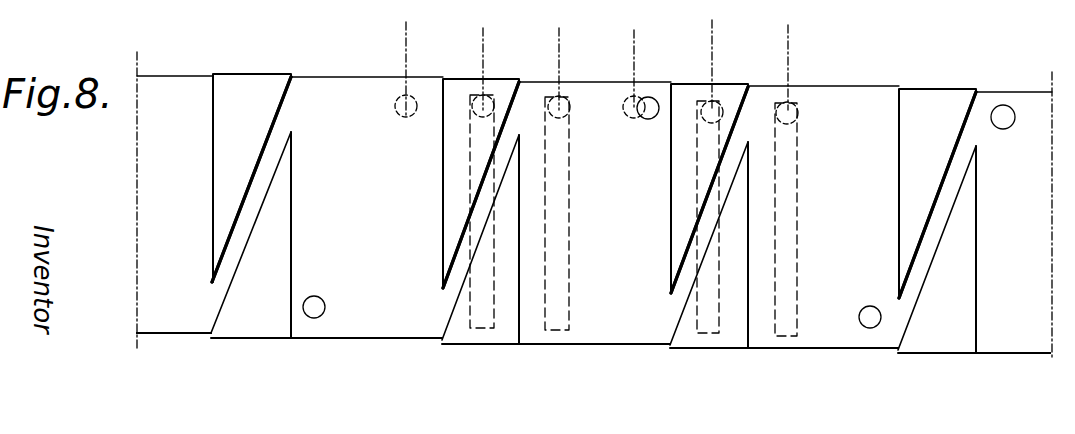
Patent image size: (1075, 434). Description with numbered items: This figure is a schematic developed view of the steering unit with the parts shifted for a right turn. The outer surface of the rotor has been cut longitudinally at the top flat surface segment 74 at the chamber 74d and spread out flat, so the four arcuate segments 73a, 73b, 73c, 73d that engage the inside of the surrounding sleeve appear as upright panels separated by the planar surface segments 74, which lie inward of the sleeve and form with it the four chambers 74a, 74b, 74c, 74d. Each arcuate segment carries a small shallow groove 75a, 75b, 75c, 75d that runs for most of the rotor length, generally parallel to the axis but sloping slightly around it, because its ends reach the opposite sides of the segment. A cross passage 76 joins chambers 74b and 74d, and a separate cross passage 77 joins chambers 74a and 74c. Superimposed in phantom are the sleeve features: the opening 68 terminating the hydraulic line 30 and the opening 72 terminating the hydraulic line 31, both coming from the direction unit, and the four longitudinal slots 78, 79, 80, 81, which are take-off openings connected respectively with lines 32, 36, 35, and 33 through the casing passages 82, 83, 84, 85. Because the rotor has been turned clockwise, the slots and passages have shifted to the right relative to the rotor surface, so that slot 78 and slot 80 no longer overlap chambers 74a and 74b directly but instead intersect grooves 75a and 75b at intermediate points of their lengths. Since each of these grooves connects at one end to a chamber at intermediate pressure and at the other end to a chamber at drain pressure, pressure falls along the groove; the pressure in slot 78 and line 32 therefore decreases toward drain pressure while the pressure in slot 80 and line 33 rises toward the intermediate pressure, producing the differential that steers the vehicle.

The hydraulic line 30 is at (633, 40).
The hydraulic line 31 is at (404, 38).
The hydraulic line 32 is at (481, 33).
The hydraulic line 33 is at (712, 40).
The hydraulic line 35 is at (790, 43).
The hydraulic line 36 is at (557, 36).
The opening 68 is at (625, 128).
The opening 72 is at (398, 119).
The arcuate segment 73a is at (493, 345).
The arcuate segment 73b is at (730, 350).
The arcuate segment 73c is at (955, 355).
The arcuate segment 73d is at (261, 339).
The surface segment 74 is at (193, 335).
The chamber 74a is at (357, 328).
The chamber 74b is at (601, 334).
The chamber 74c is at (837, 341).
The chamber 74d is at (161, 325).
The groove 75a is at (504, 168).
The groove 75b is at (680, 280).
The groove 75c is at (955, 164).
The groove 75d is at (266, 152).
The cross passage 76 is at (1004, 106).
The cross passage 77 is at (874, 307).
The longitudinal slot 78 is at (474, 196).
The longitudinal slot 79 is at (568, 245).
The longitudinal slot 80 is at (700, 189).
The longitudinal slot 81 is at (793, 204).
The passage 82 is at (477, 92).
The passage 83 is at (552, 91).
The passage 84 is at (698, 94).
The passage 85 is at (798, 118).